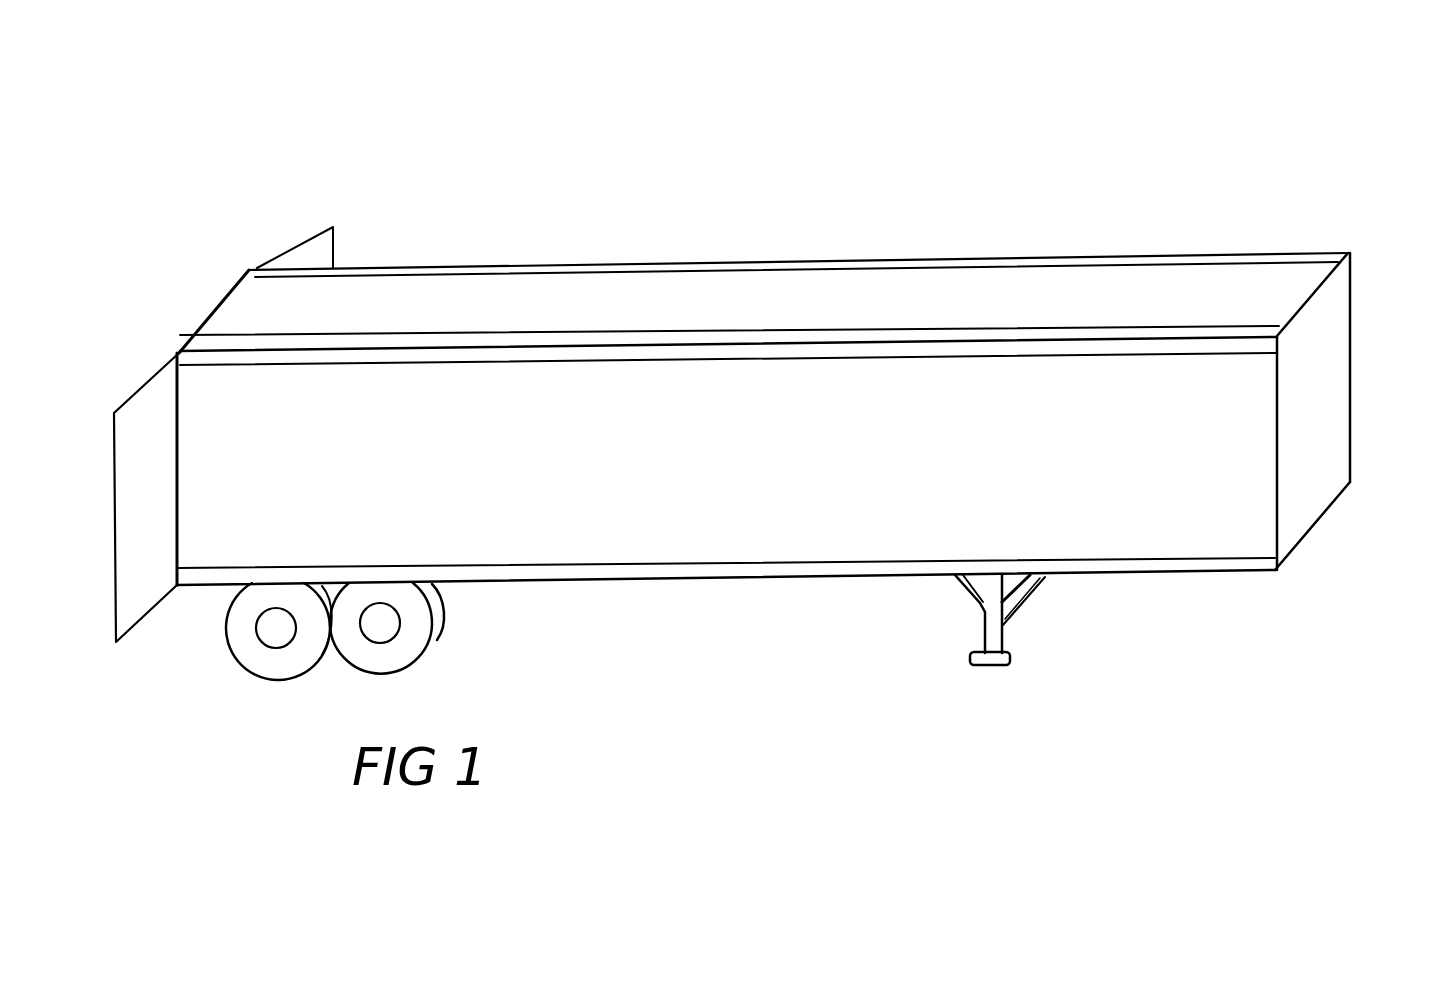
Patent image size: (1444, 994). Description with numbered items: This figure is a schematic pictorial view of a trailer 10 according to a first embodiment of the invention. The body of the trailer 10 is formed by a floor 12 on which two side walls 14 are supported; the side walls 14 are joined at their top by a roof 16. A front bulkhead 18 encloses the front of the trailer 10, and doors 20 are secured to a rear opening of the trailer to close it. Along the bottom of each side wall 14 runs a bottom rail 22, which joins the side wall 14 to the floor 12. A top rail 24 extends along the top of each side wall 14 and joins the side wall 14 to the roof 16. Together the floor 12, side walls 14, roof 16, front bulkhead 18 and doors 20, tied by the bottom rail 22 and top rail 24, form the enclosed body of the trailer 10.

The trailer 10 is at (483, 168).
The floor 12 is at (1313, 523).
The side wall 14 is at (698, 478).
The roof 16 is at (700, 317).
The front bulkhead 18 is at (1318, 380).
The doors 20 is at (300, 245).
The bottom rail 22 is at (712, 575).
The top rail 24 is at (1012, 335).